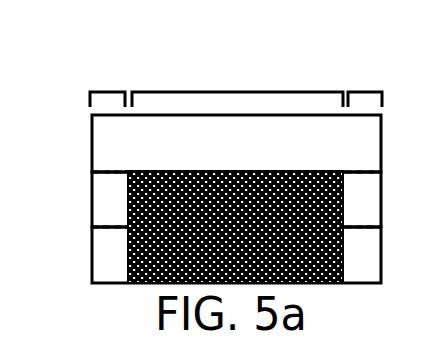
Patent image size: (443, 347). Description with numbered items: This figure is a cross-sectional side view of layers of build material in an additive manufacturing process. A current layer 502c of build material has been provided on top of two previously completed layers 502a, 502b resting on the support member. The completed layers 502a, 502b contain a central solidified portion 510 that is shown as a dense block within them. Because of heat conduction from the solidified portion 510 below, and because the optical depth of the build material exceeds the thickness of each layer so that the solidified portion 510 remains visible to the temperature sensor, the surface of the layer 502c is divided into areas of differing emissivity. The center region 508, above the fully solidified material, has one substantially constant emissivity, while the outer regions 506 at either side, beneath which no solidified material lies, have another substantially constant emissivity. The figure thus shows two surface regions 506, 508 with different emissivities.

The completed layer 502a is at (92, 268).
The completed layer 502b is at (92, 215).
The layer of build material 502c is at (92, 158).
The region 506 is at (108, 91).
The center region 508 is at (227, 91).
The solidified portion 510 is at (345, 198).